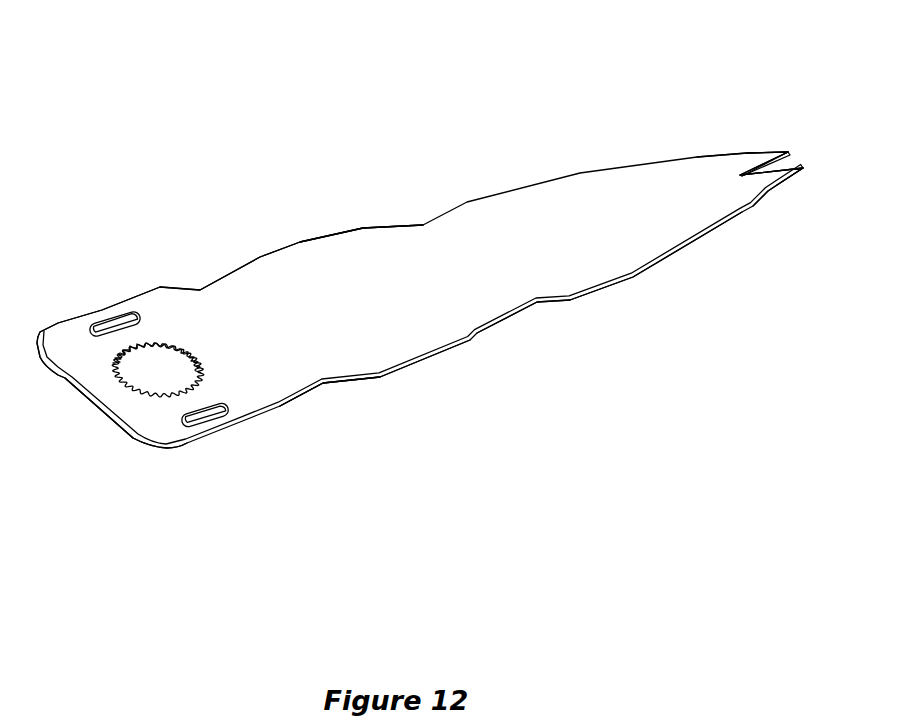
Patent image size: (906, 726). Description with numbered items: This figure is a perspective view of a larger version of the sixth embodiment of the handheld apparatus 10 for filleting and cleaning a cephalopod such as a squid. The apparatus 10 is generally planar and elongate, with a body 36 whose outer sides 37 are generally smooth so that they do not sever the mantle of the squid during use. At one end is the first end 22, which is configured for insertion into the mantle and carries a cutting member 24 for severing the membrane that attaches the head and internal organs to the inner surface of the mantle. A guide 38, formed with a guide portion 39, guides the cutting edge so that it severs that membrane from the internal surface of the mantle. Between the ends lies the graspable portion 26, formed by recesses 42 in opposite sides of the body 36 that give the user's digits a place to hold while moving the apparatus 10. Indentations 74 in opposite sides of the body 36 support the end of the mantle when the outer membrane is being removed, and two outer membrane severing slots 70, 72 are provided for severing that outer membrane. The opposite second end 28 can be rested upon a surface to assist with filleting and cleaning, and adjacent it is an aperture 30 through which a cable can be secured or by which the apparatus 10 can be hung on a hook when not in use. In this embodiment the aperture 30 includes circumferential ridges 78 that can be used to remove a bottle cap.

The handheld apparatus 10 is at (150, 113).
The first end 22 is at (605, 137).
The cutting member 24 is at (803, 145).
The graspable portion 26 is at (185, 243).
The second end 28 is at (107, 502).
The aperture 30 is at (112, 396).
The body 36 is at (388, 293).
The outer sides 37 is at (630, 277).
The guide 38 is at (753, 151).
The guide portion 39 is at (770, 181).
The recesses 42 is at (327, 383).
The outer membrane severing slot 70 is at (112, 315).
The outer membrane severing slot 72 is at (207, 424).
The indentations 74 is at (723, 155).
The circumferential ridges 78 is at (200, 360).